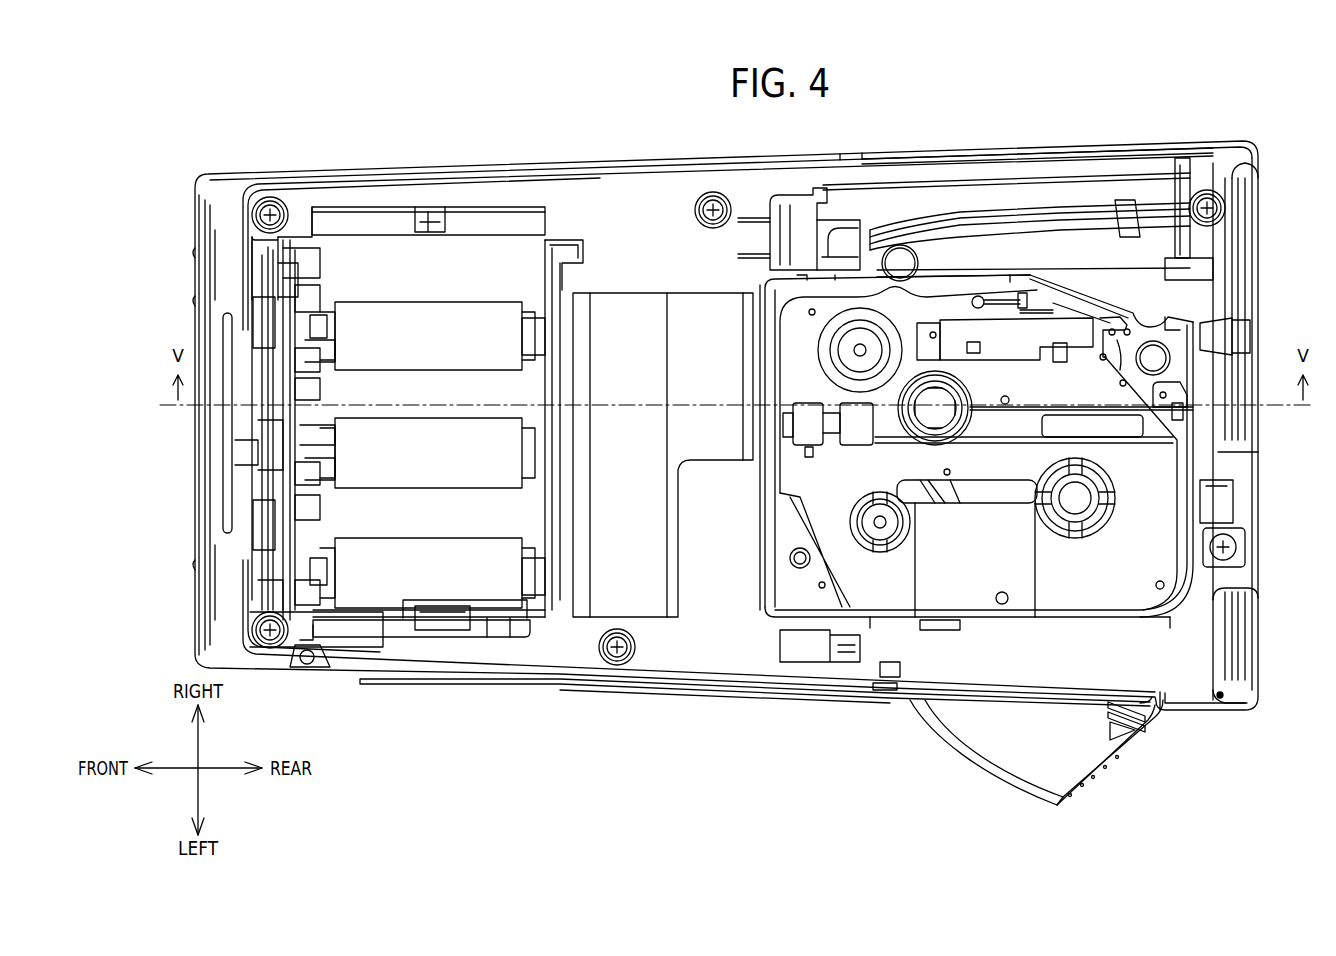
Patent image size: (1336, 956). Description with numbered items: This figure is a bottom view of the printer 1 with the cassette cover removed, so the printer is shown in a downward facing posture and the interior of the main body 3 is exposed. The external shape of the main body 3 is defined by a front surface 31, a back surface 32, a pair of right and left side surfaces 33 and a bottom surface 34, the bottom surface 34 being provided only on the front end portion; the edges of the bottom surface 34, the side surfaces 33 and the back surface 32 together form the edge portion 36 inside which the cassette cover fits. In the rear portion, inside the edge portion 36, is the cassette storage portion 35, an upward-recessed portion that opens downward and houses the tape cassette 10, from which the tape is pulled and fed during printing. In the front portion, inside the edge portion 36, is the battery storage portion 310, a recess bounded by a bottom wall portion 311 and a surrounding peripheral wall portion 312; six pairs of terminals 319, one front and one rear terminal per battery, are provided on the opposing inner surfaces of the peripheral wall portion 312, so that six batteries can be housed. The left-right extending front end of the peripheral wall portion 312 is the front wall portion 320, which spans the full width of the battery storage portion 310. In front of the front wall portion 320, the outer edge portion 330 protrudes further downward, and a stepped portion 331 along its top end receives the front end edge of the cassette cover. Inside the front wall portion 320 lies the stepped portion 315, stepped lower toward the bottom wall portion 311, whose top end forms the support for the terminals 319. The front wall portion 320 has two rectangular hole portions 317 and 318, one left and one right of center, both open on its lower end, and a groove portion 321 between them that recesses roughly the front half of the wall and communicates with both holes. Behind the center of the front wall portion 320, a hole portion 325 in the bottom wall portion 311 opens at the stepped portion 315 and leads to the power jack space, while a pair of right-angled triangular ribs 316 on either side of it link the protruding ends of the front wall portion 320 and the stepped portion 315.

The printer 1 is at (1187, 105).
The main body 3 is at (990, 133).
The tape cassette 10 is at (755, 572).
The front surface 31 is at (195, 195).
The back surface 32 is at (1265, 265).
The side surfaces 33 is at (657, 160).
The bottom surface 34 is at (228, 205).
The cassette storage portion 35 is at (1070, 332).
The edge portion 36 is at (540, 660).
The battery storage portion 310 is at (488, 458).
The bottom wall portion 311 is at (497, 517).
The peripheral wall portion 312 is at (487, 245).
The stepped portion 315 is at (310, 300).
The ribs 316 is at (330, 352).
The hole portion 317 is at (265, 525).
The hole portion 318 is at (265, 320).
The terminals 319 is at (310, 335).
The front wall portion 320 is at (287, 250).
The groove portion 321 is at (258, 452).
The hole portion 325 is at (330, 433).
The outer edge portion 330 is at (268, 280).
The stepped portion 331 is at (252, 250).